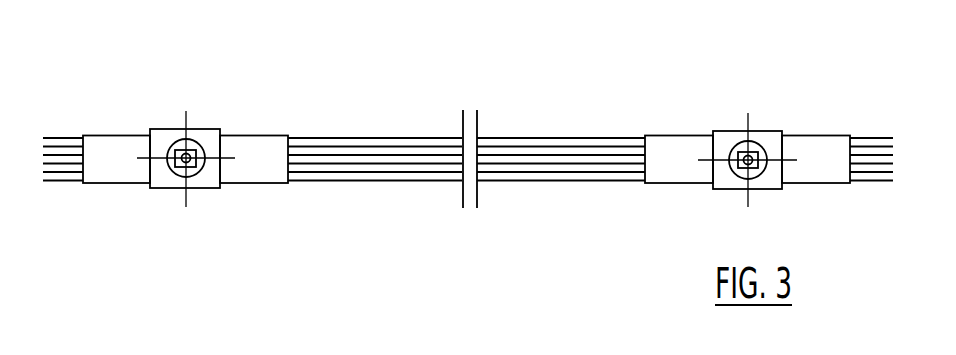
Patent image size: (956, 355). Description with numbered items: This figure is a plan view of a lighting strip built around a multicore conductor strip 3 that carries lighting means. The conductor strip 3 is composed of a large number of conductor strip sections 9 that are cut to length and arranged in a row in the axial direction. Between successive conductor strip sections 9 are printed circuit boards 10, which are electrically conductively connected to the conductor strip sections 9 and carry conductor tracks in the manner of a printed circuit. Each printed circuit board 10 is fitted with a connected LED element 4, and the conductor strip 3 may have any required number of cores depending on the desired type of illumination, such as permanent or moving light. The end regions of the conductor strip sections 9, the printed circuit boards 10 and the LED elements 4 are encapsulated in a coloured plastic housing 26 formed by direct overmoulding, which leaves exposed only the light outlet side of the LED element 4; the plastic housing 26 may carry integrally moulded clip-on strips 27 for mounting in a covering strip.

The multicore conductor strip 3 is at (468, 166).
The LED element 4 is at (193, 172).
The conductor strip sections 9 is at (71, 137).
The printed circuit boards 10 is at (250, 135).
The plastic housing 26 is at (268, 183).
The clip-on strips 27 is at (157, 188).